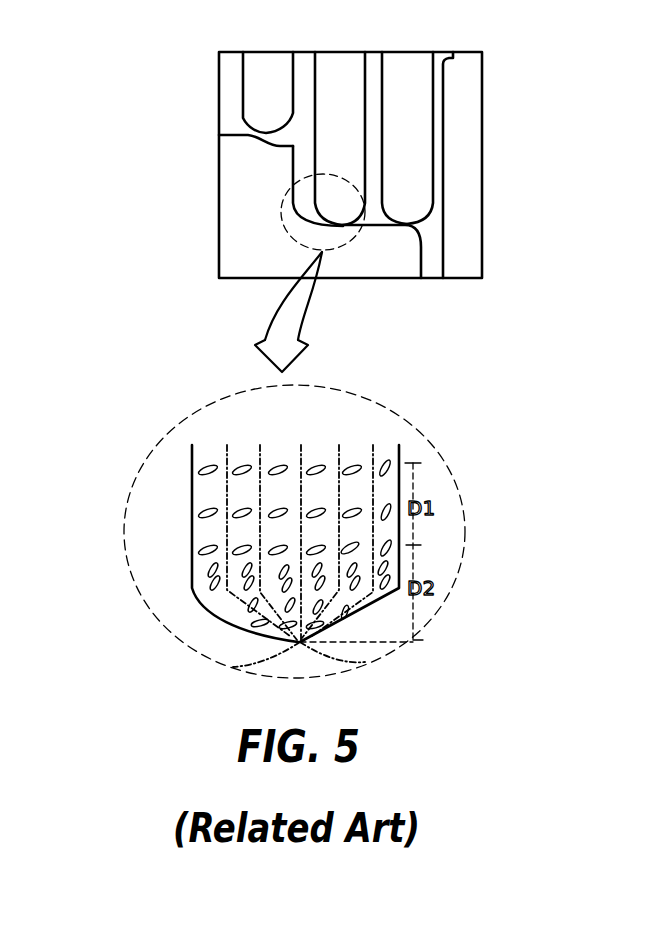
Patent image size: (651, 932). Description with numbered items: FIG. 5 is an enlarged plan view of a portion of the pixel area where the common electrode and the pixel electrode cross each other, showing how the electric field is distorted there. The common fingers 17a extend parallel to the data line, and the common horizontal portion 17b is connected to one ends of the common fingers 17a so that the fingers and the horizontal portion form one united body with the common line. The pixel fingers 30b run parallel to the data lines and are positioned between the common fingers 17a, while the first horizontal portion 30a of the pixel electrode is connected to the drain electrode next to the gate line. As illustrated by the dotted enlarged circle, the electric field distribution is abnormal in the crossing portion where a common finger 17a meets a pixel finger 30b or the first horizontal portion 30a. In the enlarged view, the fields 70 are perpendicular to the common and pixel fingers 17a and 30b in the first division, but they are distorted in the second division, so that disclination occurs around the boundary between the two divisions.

The common finger 17a is at (230, 82).
The common horizontal portion 17b is at (422, 243).
The first horizontal portion 30a is at (445, 267).
The pixel finger 30b is at (317, 77).
The fibers 70 is at (362, 473).